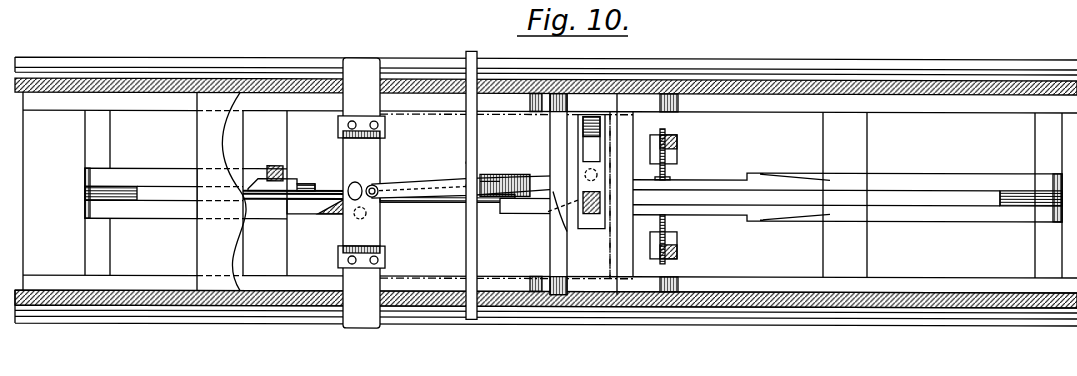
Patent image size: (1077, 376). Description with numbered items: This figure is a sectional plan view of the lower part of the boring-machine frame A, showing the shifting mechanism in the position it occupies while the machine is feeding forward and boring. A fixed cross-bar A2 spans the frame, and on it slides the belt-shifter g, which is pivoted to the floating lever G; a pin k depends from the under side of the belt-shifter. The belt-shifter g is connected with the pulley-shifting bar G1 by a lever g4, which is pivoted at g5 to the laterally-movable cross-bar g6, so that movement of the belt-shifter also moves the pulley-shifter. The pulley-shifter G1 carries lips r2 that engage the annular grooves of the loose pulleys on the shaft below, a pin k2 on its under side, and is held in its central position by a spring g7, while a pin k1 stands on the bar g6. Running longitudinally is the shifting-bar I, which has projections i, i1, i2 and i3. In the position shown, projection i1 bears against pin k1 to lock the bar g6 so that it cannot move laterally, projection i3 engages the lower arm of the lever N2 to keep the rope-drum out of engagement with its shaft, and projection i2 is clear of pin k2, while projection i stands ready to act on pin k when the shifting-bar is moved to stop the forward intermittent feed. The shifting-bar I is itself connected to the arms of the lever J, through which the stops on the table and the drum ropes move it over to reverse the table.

The frame A is at (1005, 86).
The casing partition A2 is at (610, 140).
The shifting-bar I is at (158, 188).
The lever N2 is at (275, 165).
The projection i is at (518, 212).
The projection i1 is at (480, 178).
The projection i2 is at (316, 214).
The projection i3 is at (291, 178).
The belt-shifter g is at (580, 136).
The lever g4 is at (441, 183).
The pivot g5 is at (478, 185).
The cross-bar g6 is at (466, 176).
The spring g7 is at (300, 200).
The floating lever G is at (563, 205).
The pulley-shifting bar G1 is at (361, 193).
The lips r2 is at (385, 134).
The pin k is at (598, 178).
The pin k1 is at (466, 160).
The pin k2 is at (357, 225).
The lever J is at (677, 145).